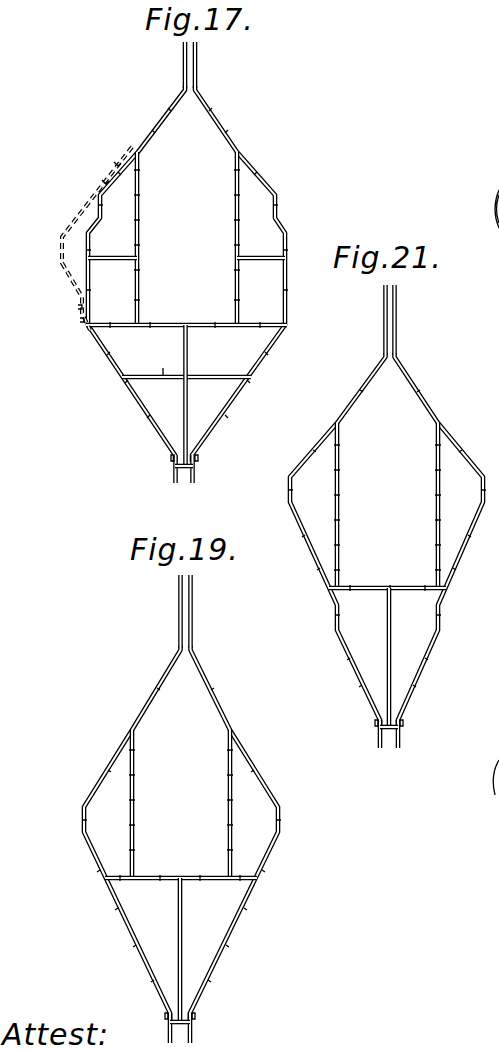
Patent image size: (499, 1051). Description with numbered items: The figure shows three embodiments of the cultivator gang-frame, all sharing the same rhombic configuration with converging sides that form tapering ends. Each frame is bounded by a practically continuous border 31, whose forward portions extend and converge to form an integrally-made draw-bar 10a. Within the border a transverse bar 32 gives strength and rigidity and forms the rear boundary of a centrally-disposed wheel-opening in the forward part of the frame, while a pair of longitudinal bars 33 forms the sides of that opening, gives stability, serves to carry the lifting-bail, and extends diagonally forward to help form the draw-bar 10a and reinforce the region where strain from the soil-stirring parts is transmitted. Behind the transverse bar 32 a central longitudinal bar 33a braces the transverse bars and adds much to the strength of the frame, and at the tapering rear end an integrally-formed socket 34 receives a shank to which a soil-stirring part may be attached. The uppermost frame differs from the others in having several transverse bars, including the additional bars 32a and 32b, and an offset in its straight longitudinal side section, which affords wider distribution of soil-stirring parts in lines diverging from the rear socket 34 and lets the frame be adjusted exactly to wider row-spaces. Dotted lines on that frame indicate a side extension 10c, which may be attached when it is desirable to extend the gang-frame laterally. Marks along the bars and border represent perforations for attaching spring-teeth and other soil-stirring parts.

In FIG. 17, the draw-bar 10a is at (198, 62).
In FIG. 19, the draw-bar 10a is at (193, 613).
In FIG. 21, the draw-bar 10a is at (397, 312).
In FIG. 17, the side extension 10c is at (58, 256).
In FIG. 17, the border 31 is at (255, 165).
In FIG. 19, the border 31 is at (245, 741).
In FIG. 21, the border 31 is at (422, 389).
In FIG. 17, the transverse bar 32 is at (166, 305).
In FIG. 19, the transverse bar 32 is at (200, 880).
In FIG. 21, the transverse bar 32 is at (405, 588).
In FIG. 17, the transverse bar 32a is at (161, 364).
In FIG. 17, the transverse bar 32b is at (186, 243).
In FIG. 17, the longitudinal bar 33 is at (139, 190).
In FIG. 19, the longitudinal bar 33 is at (132, 806).
In FIG. 21, the longitudinal bar 33 is at (337, 480).
In FIG. 17, the longitudinal bar 33a is at (188, 352).
In FIG. 19, the longitudinal bar 33a is at (181, 905).
In FIG. 21, the longitudinal bar 33a is at (390, 626).
In FIG. 17, the socket 34 is at (196, 472).
In FIG. 19, the socket 34 is at (190, 1030).
In FIG. 21, the socket 34 is at (398, 735).